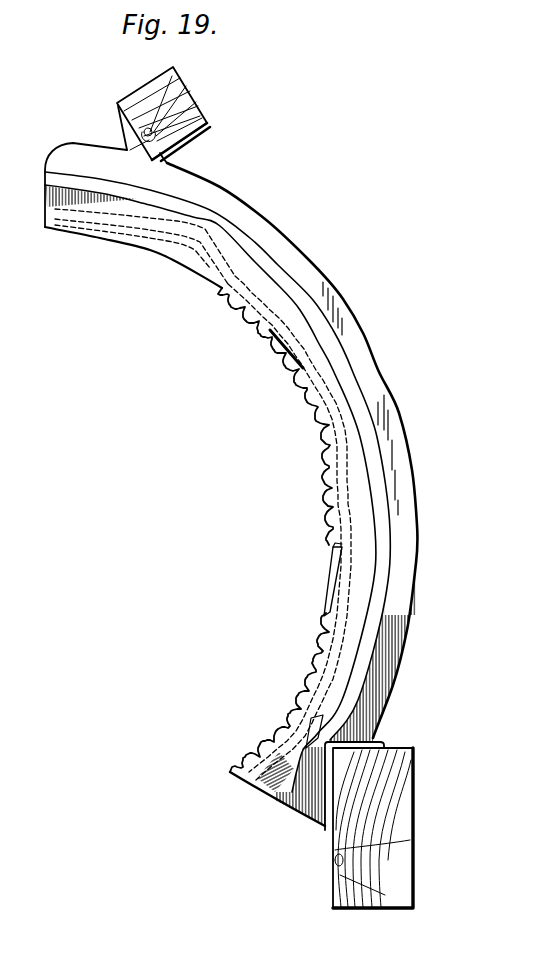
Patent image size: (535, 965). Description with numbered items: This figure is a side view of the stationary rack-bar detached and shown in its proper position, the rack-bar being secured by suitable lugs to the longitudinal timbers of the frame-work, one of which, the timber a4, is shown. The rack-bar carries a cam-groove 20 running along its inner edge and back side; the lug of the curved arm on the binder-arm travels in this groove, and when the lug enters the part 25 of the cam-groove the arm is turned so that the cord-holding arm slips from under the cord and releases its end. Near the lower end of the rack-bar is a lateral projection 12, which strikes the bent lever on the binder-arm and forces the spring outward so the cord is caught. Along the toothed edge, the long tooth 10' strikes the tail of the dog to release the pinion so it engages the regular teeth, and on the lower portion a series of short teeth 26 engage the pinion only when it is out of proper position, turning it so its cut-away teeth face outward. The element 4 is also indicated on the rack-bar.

The cam-groove 20 is at (355, 413).
The part of the cam-groove 25 is at (292, 452).
The lateral projection 12 is at (288, 738).
The bar 4 is at (278, 357).
The long tooth 10' is at (321, 579).
The short teeth 26 is at (303, 657).
The longitudinal timber a4 is at (278, 487).